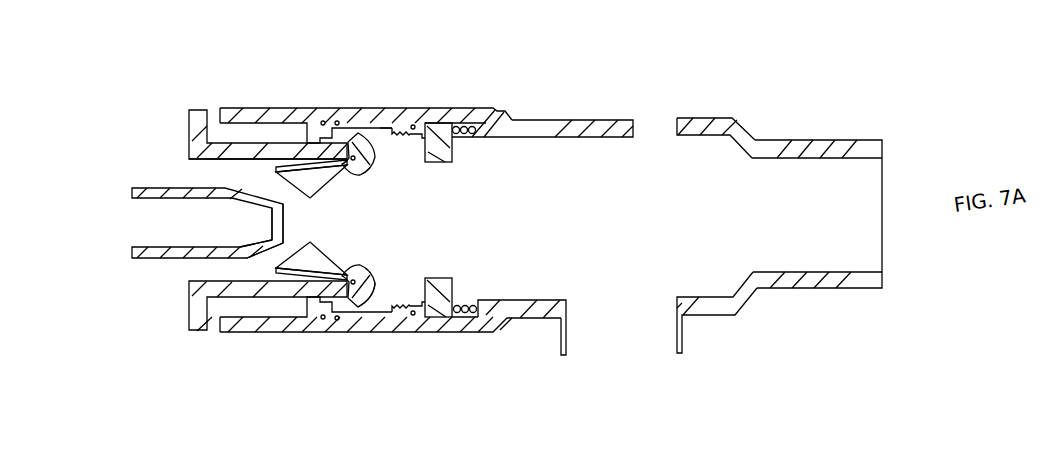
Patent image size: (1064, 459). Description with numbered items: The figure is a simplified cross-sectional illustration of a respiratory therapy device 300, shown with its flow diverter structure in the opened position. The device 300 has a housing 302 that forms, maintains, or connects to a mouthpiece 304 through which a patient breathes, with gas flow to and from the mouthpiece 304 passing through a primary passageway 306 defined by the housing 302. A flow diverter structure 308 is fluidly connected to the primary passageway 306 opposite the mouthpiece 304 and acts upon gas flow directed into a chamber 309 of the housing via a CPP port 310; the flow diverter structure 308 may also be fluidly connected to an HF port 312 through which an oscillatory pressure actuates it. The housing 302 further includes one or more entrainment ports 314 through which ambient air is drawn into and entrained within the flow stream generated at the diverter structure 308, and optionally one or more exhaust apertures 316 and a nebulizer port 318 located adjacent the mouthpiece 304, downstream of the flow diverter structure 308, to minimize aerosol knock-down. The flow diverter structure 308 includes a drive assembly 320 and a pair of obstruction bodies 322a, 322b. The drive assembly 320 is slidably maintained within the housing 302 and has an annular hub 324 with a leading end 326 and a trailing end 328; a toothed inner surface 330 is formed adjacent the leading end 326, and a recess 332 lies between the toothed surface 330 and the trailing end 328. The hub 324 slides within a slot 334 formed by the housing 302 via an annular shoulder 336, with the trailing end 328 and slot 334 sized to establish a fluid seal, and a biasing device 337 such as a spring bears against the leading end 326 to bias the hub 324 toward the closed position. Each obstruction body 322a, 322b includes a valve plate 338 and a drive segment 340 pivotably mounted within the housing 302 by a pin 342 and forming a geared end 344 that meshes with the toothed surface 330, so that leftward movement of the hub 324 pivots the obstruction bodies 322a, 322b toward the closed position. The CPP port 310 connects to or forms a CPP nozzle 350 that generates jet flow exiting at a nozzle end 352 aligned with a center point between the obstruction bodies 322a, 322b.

The respiratory therapy device 300 is at (426, 117).
The housing 302 is at (552, 114).
The mouthpiece 304 is at (856, 134).
The primary passageway 306 is at (547, 288).
The flow diverter structure 308 is at (462, 165).
The chamber 309 is at (261, 300).
The CPP port 310 is at (140, 262).
The HF port 312 is at (208, 108).
The entrainment port 314 is at (200, 166).
The exhaust aperture 316 is at (676, 120).
The nebulizer port 318 is at (676, 345).
The drive assembly 320 is at (422, 155).
The obstruction body 322a is at (302, 155).
The obstruction body 322b is at (302, 287).
The annular hub 324 is at (407, 116).
The leading end 326 is at (464, 125).
The trailing end 328 is at (309, 122).
The toothed inner surface 330 is at (419, 298).
The recess 332 is at (380, 306).
The slot 334 is at (259, 117).
The annular shoulder 336 is at (243, 168).
The biasing device 337 is at (477, 120).
The valve plate 338 is at (311, 258).
The drive segment 340 is at (361, 272).
The pin 342 is at (355, 300).
The geared end 344 is at (372, 288).
The CPP nozzle 350 is at (228, 263).
The nozzle end 352 is at (290, 214).